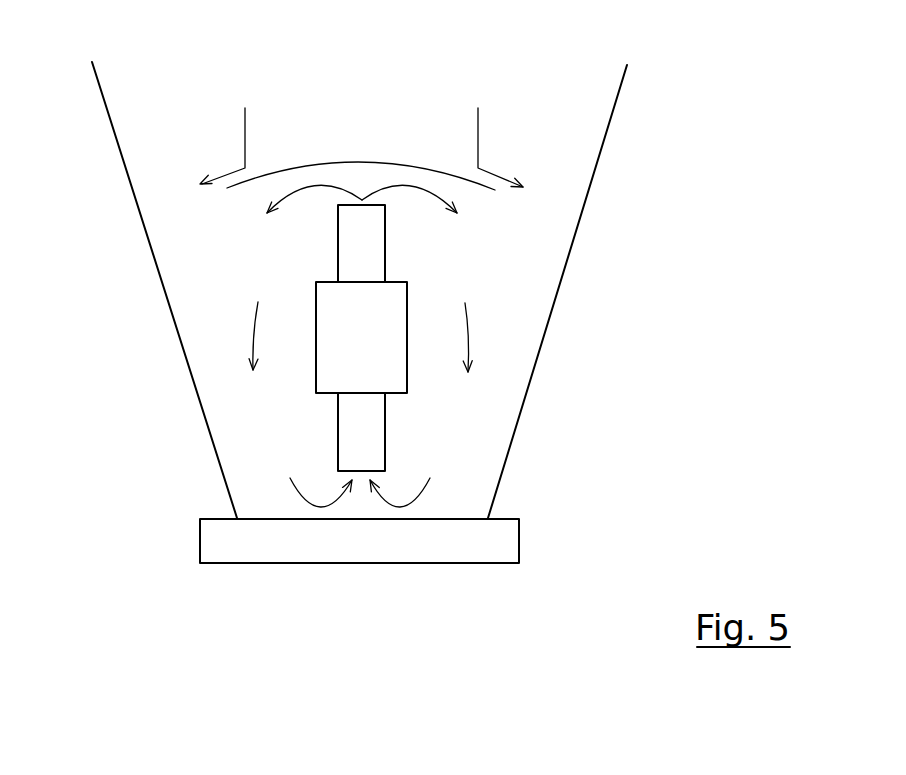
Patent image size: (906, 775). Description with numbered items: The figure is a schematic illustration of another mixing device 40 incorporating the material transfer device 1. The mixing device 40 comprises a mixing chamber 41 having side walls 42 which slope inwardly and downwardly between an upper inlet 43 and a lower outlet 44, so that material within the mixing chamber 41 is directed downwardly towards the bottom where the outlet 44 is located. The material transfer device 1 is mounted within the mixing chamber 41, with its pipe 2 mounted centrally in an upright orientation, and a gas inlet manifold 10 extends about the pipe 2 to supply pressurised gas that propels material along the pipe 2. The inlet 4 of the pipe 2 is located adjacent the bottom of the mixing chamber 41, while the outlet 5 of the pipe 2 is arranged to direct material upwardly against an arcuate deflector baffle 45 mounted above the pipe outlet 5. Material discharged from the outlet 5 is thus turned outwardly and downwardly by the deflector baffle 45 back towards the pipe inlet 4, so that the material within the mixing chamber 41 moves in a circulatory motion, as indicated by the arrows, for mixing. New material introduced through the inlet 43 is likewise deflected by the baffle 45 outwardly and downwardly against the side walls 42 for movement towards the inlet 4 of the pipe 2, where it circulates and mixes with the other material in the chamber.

The material transfer device 1 is at (308, 325).
The pipe 2 is at (350, 250).
The inlet 4 is at (337, 471).
The outlet 5 is at (362, 200).
The gas inlet manifold 10 is at (328, 368).
The mixing device 40 is at (638, 120).
The mixing chamber 41 is at (588, 250).
The side walls 42 is at (127, 177).
The upper inlet 43 is at (572, 63).
The lower outlet 44 is at (360, 563).
The arcuate deflector baffle 45 is at (320, 152).